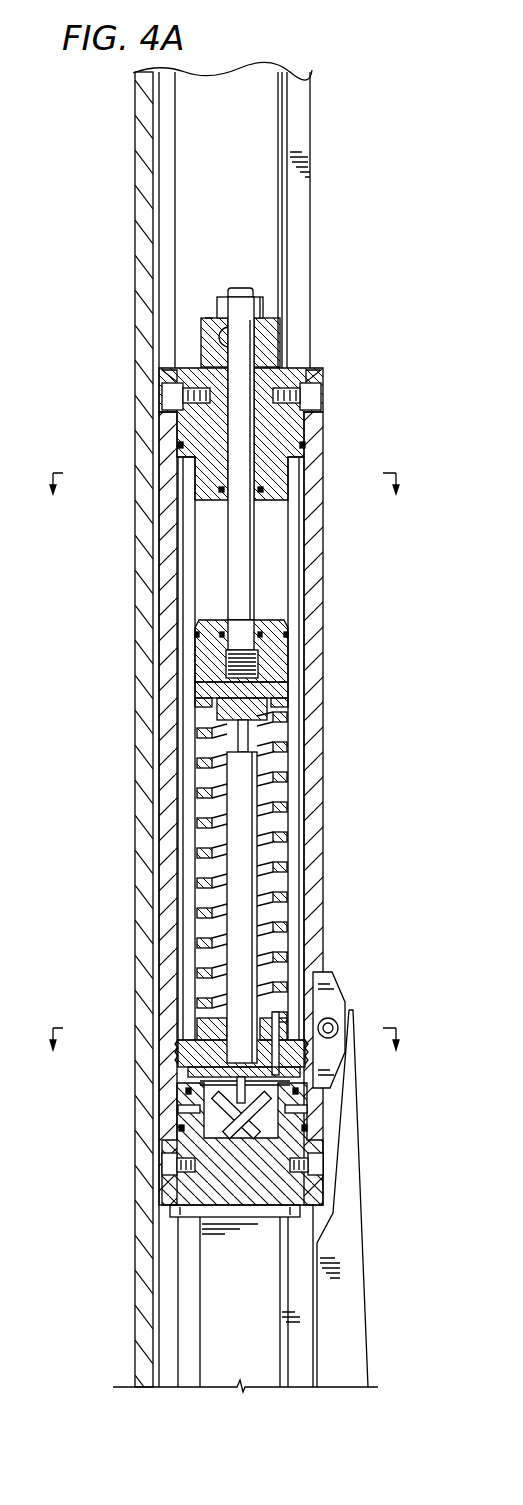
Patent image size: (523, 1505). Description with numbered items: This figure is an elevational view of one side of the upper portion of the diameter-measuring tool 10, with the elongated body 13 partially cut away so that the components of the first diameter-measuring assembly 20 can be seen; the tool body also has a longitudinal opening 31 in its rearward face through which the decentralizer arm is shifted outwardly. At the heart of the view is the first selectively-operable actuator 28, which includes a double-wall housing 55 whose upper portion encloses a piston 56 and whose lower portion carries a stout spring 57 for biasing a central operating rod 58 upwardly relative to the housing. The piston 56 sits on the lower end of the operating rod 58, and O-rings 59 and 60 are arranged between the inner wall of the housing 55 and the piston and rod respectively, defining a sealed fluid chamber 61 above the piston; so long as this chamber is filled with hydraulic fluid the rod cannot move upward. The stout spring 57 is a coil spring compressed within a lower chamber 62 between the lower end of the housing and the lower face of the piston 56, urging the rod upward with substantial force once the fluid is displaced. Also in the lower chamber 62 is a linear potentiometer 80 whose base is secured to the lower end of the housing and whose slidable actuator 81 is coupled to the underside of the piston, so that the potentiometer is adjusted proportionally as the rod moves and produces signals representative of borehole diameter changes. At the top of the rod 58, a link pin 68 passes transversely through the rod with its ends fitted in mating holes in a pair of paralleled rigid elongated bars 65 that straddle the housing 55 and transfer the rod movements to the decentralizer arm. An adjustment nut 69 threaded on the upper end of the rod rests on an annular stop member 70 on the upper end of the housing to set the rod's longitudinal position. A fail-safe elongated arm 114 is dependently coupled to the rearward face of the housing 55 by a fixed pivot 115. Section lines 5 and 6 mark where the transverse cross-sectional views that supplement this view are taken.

The diameter-measuring tool 10 is at (294, 786).
The elongated body 13 is at (146, 234).
The first diameter-measuring assembly 20 is at (388, 1179).
The first selectively-operable actuator 28 is at (314, 769).
The longitudinal opening 31 is at (300, 215).
The double-wall housing 55 is at (277, 808).
The piston 56 is at (280, 662).
The stout spring 57 is at (281, 870).
The central operating rod 58 is at (255, 430).
The O-ring 59 is at (197, 637).
The O-ring 60 is at (203, 490).
The sealed fluid chamber 61 is at (282, 748).
The lower chamber 62 is at (288, 822).
The rigid elongated bars 65 is at (213, 1298).
The link pin 68 is at (281, 331).
The adjustment nut 69 is at (263, 303).
The annular stop member 70 is at (212, 318).
The linear potentiometer 80 is at (243, 921).
The slidable actuator 81 is at (265, 730).
The elongated arm 114 is at (345, 1242).
The fixed pivot 115 is at (332, 1020).
The Line 5— 5 is at (225, 498).
The Line 6— 6 is at (225, 1055).